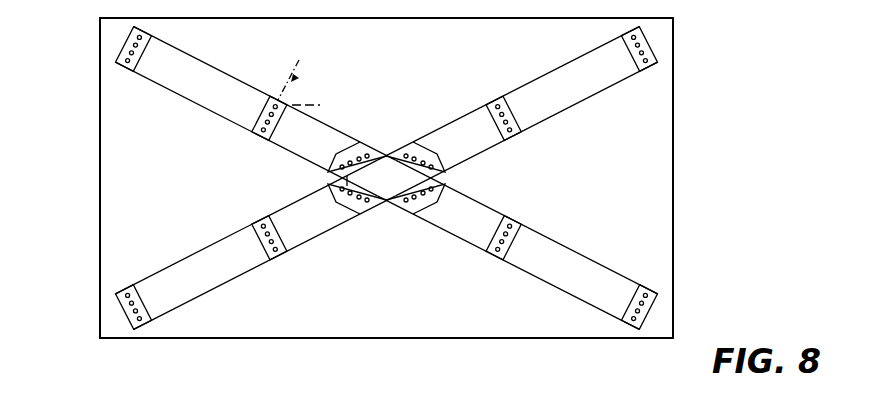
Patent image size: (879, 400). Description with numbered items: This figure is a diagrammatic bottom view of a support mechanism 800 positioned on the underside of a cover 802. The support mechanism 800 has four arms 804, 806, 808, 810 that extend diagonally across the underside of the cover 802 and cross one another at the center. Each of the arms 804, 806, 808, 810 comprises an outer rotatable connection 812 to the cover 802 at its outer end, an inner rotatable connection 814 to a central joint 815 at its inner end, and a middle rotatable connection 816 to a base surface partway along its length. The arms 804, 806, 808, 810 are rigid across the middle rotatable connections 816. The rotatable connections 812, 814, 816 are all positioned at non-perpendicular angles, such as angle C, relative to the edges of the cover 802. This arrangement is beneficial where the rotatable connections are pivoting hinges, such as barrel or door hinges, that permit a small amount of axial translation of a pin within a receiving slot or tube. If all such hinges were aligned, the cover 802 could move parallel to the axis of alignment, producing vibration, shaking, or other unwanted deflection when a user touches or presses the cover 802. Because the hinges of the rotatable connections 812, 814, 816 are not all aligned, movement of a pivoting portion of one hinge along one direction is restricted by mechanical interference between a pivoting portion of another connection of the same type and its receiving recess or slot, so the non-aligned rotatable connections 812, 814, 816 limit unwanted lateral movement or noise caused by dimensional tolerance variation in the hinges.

The support mechanism 800 is at (389, 181).
The cover 802 is at (648, 130).
The arm 804 is at (563, 143).
The arm 806 is at (541, 197).
The arm 808 is at (232, 197).
The arm 810 is at (210, 143).
The outer rotatable connection 812 is at (115, 62).
The inner rotatable connection 814 is at (422, 156).
The central joint 815 is at (347, 181).
The middle rotatable connection 816 is at (271, 97).
The angle C is at (309, 98).